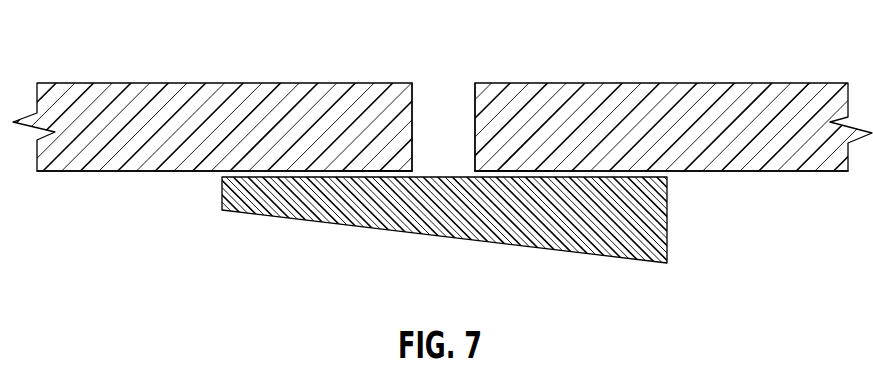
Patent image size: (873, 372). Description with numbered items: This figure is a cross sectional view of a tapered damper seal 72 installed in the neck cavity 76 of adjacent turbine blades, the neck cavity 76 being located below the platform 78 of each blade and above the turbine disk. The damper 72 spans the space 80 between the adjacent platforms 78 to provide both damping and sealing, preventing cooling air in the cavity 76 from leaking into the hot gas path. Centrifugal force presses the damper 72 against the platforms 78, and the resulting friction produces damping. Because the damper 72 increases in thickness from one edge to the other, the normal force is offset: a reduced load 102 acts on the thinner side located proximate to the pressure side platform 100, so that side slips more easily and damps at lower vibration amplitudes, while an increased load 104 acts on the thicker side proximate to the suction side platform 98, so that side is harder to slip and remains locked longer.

The damper seal 72 is at (470, 227).
The neck cavity 76 is at (184, 303).
The platform 78 is at (127, 158).
The space 80 is at (429, 165).
The suction side 98 is at (665, 83).
The pressure side 100 is at (183, 83).
The load 102 is at (362, 166).
The load 104 is at (528, 167).